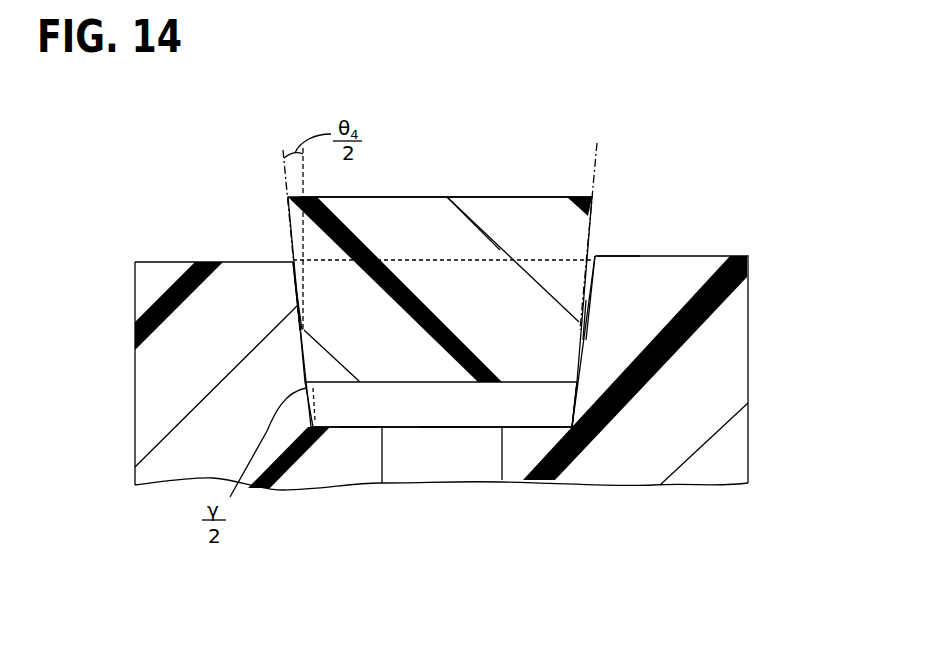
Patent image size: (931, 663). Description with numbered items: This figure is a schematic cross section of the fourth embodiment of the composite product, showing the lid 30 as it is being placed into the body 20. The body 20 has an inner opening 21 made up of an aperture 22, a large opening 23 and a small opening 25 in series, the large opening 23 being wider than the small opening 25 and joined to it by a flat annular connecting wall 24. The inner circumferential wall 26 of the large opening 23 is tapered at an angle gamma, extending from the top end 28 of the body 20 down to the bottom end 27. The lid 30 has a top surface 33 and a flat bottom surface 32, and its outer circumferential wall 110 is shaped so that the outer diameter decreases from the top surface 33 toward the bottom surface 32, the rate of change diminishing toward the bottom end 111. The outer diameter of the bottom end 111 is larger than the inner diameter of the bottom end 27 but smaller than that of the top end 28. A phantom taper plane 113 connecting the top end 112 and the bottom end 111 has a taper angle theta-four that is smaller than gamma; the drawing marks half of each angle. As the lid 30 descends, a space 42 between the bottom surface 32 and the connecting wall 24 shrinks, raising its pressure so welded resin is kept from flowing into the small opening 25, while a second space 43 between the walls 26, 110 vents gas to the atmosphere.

The body 20 is at (756, 356).
The inner opening 21 is at (505, 553).
The aperture 22 is at (492, 262).
The large opening 23 is at (455, 414).
The connecting wall 24 is at (367, 427).
The small opening 25 is at (490, 470).
The inner circumferential wall 26 is at (292, 300).
The bottom end of the body 27 is at (570, 420).
The top end of the body 28 is at (594, 262).
The lid 30 is at (603, 210).
The bottom surface 32 is at (413, 384).
The top surface 33 is at (433, 196).
The space 42 is at (537, 414).
The second space 43 is at (591, 275).
The outer circumferential wall 110 is at (589, 312).
The bottom end of the lid 111 is at (577, 383).
The top end of the lid 112 is at (594, 196).
The phantom taper plane 113 is at (291, 253).